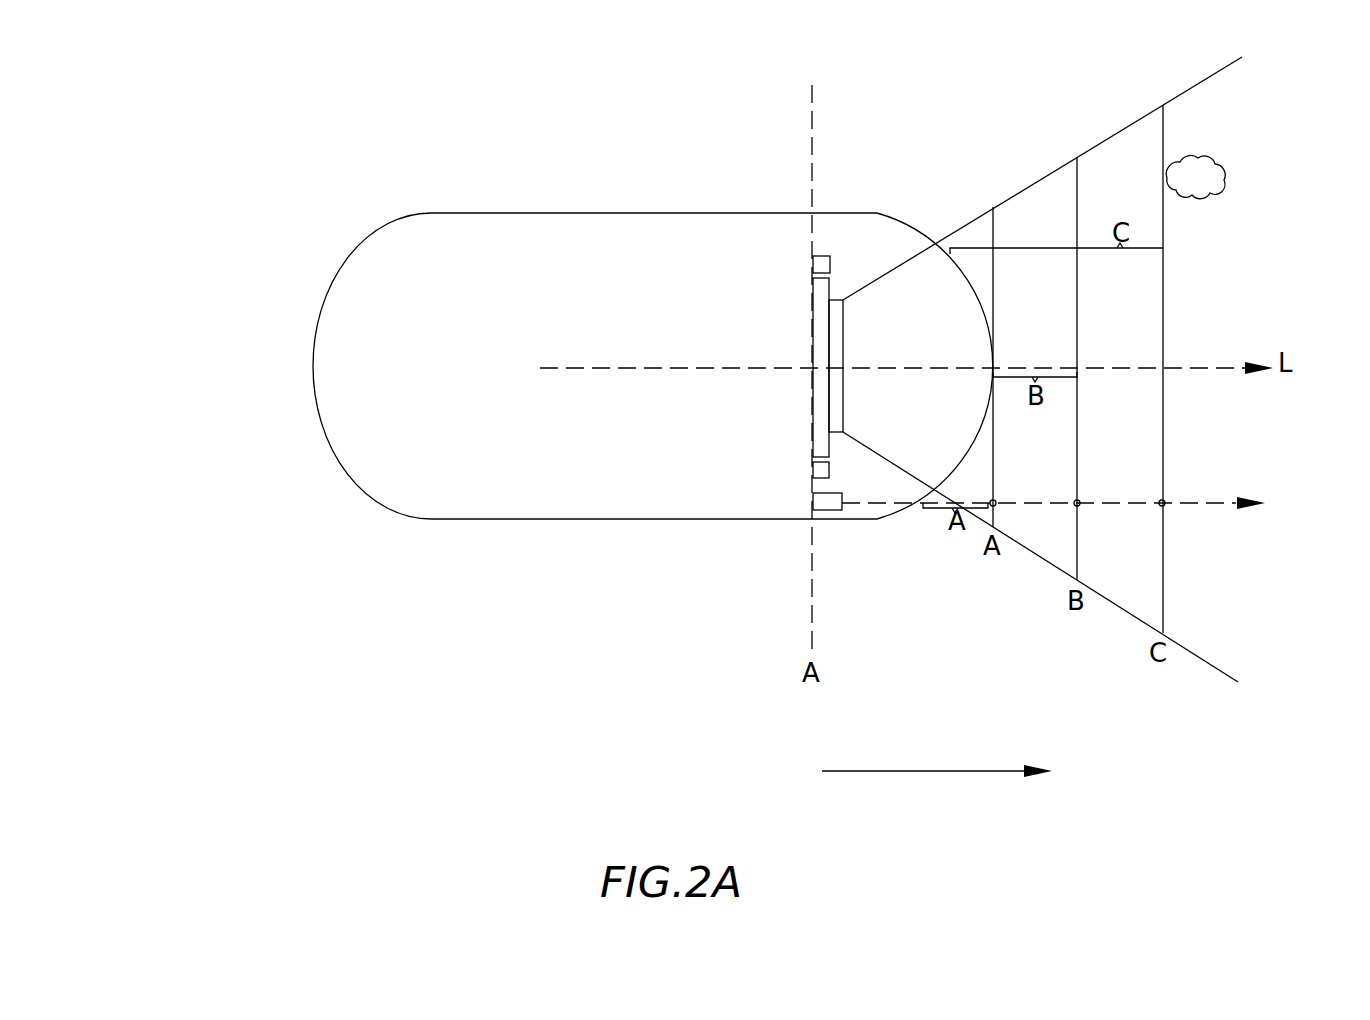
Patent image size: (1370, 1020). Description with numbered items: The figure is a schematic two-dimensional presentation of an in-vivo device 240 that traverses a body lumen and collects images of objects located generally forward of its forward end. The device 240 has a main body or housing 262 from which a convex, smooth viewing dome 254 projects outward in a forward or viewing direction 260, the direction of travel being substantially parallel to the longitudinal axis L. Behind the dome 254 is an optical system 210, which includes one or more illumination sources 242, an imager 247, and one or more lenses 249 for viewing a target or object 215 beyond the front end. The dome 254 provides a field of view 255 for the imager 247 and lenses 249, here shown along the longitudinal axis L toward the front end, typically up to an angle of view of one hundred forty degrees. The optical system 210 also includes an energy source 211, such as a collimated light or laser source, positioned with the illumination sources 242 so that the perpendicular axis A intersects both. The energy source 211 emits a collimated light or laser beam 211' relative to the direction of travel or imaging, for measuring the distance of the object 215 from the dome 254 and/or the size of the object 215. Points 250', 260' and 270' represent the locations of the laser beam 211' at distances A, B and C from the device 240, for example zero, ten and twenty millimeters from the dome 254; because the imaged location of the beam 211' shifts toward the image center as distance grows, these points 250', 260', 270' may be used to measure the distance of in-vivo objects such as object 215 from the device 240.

The optical system 210 is at (887, 88).
The energy source 211 is at (845, 545).
The laser beam 211' is at (1053, 529).
The object 215 is at (1200, 157).
The in-vivo device 240 is at (393, 123).
The illumination source 242 is at (830, 263).
The imager 247 is at (830, 288).
The lenses 249 is at (838, 300).
The point 250' is at (1028, 367).
The viewing dome 254 is at (963, 463).
The field of view 255 is at (1123, 610).
The forward direction 260 is at (937, 810).
The point 260' is at (1111, 368).
The housing 262 is at (627, 520).
The point 270' is at (1195, 369).